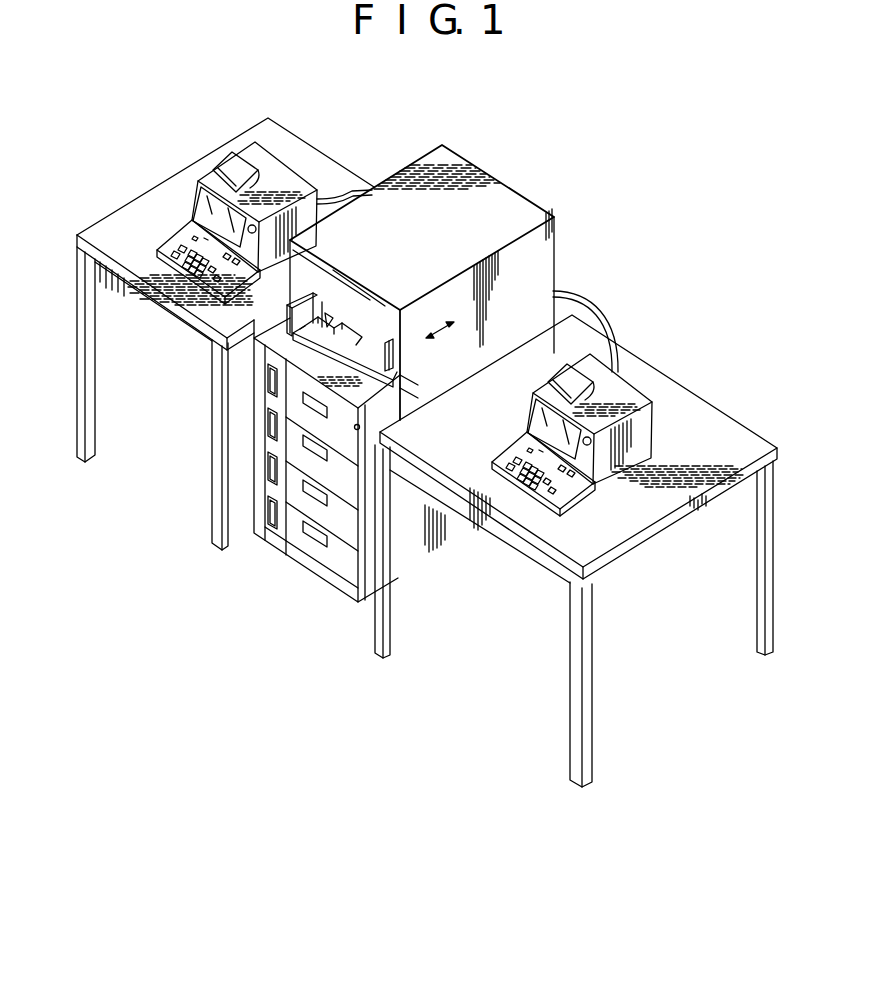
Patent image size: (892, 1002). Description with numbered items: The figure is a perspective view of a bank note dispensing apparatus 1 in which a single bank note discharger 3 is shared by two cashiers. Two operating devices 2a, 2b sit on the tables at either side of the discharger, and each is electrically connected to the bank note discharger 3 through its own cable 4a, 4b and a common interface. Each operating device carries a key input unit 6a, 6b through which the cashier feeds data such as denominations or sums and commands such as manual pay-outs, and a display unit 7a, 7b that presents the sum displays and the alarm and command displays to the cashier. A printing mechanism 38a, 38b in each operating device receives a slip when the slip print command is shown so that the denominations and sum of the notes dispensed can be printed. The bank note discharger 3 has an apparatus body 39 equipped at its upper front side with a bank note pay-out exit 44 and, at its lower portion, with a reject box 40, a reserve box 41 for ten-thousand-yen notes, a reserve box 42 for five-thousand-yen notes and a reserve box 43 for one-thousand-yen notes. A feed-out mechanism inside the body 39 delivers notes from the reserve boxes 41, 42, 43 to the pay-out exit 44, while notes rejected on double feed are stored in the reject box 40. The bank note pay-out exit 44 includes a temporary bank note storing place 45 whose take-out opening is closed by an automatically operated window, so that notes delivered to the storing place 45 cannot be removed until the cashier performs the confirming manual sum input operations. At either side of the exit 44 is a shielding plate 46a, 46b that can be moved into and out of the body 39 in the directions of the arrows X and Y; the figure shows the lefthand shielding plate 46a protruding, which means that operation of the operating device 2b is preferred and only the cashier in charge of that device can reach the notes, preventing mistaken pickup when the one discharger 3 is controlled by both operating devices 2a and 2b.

The bank note dispensing apparatus 1 is at (470, 153).
The operating device 2a is at (292, 186).
The operating device 2b is at (636, 401).
The bank note discharger 3 is at (502, 208).
The cable 4a is at (357, 188).
The cable 4b is at (608, 322).
The key input unit 6a is at (170, 245).
The key input unit 6b is at (577, 483).
The display unit 7a is at (200, 202).
The display unit 7b is at (532, 426).
The printing mechanism 38a is at (228, 168).
The printing mechanism 38b is at (560, 389).
The apparatus body 39 is at (540, 252).
The reject box 40 is at (285, 397).
The reserve box 41 is at (285, 438).
The reserve box 42 is at (285, 470).
The reserve box 43 is at (288, 527).
The bank note pay-out exit 44 is at (360, 348).
The temporary bank note storing place 45 is at (350, 334).
The shielding plate 46a is at (305, 306).
The shielding plate 46b is at (393, 348).